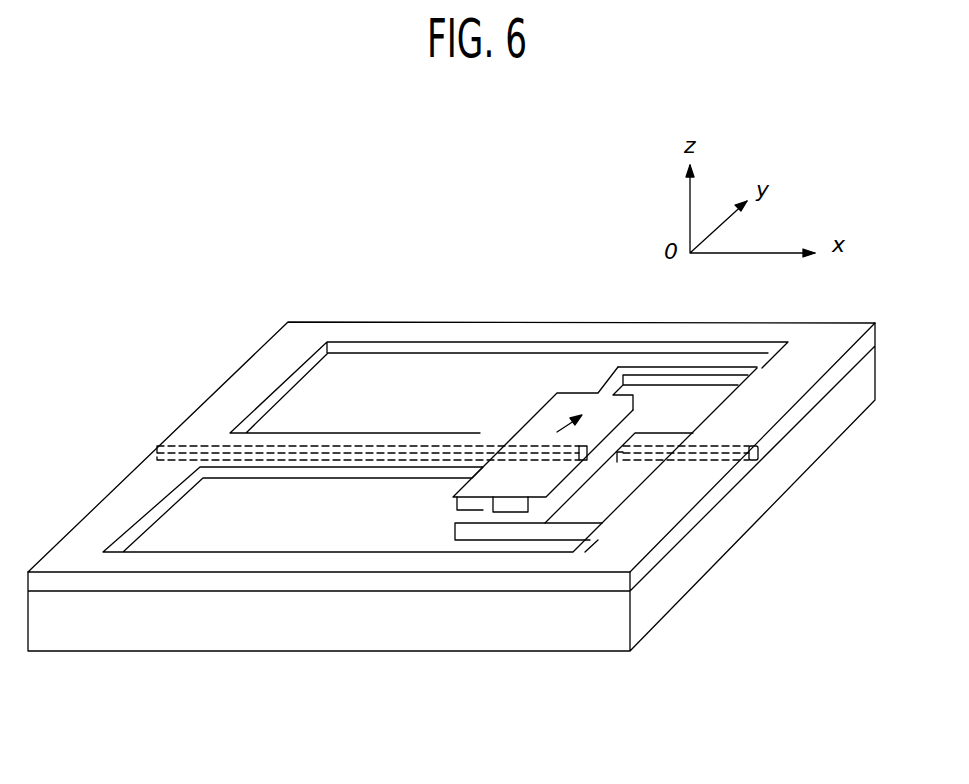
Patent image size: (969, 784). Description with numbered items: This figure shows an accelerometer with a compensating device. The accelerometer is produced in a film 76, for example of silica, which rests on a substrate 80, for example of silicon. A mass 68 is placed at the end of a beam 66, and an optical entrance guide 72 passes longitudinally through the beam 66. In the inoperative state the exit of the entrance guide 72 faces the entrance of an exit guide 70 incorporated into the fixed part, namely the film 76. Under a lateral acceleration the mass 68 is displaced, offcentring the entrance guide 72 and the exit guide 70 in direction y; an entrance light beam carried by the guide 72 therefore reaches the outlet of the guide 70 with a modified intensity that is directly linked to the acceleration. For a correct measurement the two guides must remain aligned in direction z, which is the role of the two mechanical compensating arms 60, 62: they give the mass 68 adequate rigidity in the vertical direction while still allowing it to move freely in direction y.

The mechanical compensating arm 60 is at (710, 368).
The mechanical compensating arm 62 is at (553, 525).
The beam 66 is at (313, 437).
The mass 68 is at (567, 408).
The exit guide 70 is at (760, 452).
The entrance guide 72 is at (205, 447).
The film 76 is at (90, 552).
The substrate 80 is at (172, 630).